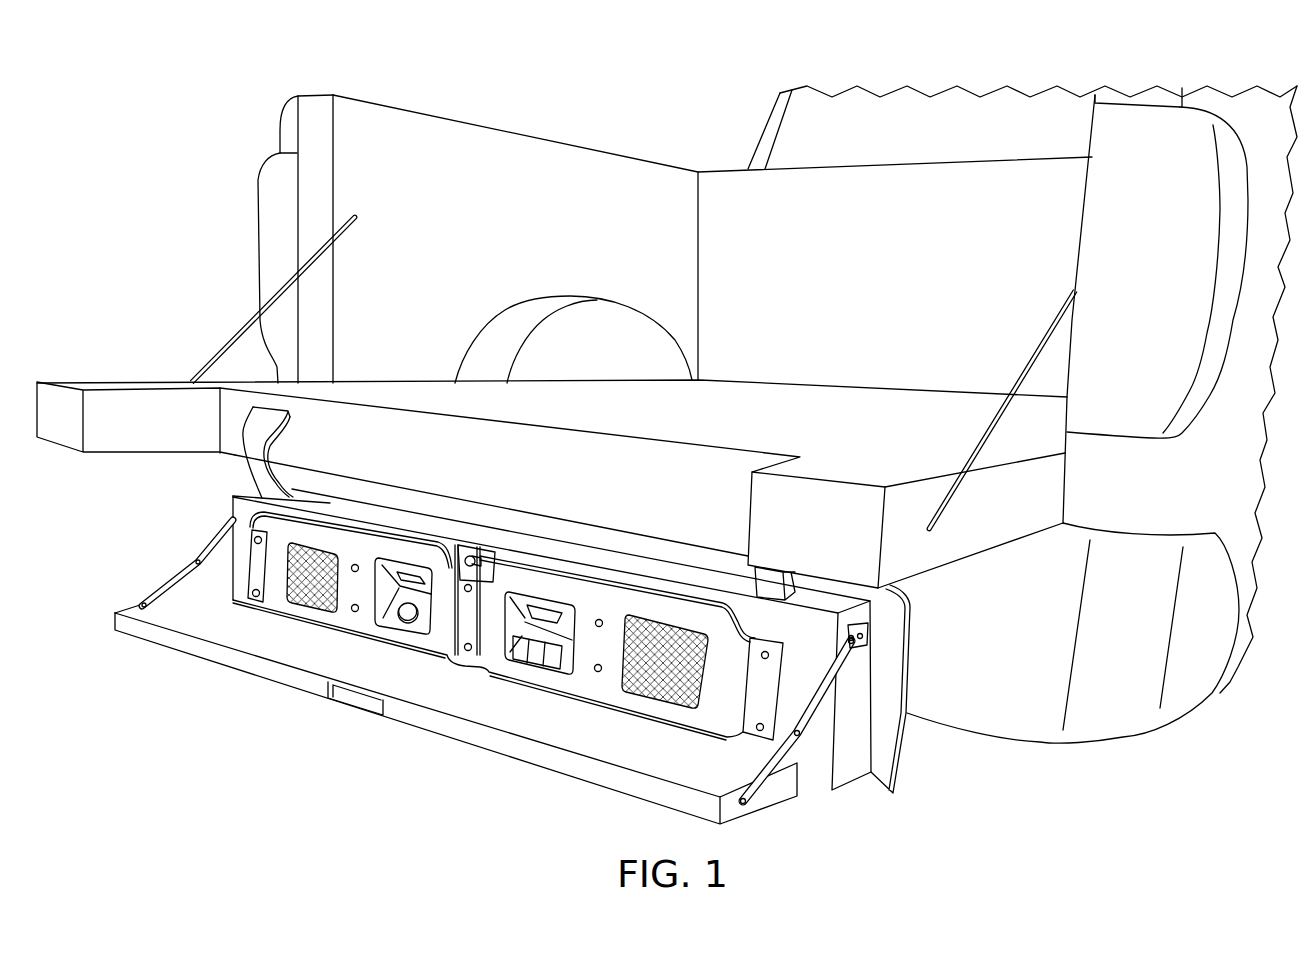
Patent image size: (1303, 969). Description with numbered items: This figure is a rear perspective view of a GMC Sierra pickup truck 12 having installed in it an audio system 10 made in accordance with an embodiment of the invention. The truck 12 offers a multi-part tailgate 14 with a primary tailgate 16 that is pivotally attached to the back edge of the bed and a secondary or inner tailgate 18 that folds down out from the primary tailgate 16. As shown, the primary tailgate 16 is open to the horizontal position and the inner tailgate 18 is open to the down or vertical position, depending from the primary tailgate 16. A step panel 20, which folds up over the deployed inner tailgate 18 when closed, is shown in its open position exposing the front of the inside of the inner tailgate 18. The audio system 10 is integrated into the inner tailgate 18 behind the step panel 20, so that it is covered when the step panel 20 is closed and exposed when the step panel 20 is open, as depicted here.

The audio system 10 is at (232, 553).
The GMC Sierra truck 12 is at (733, 112).
The multi-part tailgate 14 is at (231, 381).
The primary tailgate 16 is at (90, 383).
The inner tailgate 18 is at (815, 763).
The step panel 20 is at (135, 613).